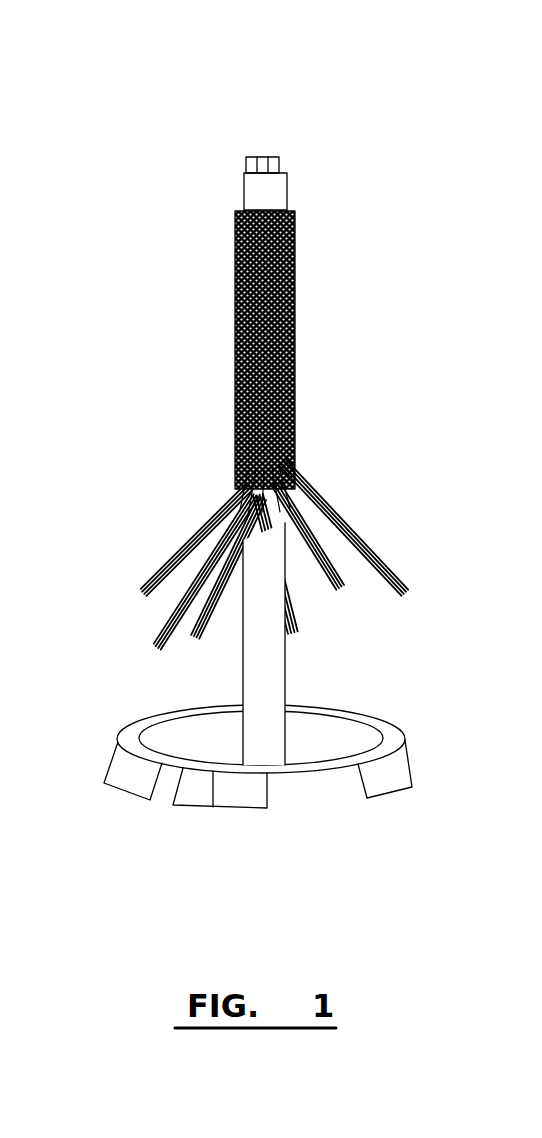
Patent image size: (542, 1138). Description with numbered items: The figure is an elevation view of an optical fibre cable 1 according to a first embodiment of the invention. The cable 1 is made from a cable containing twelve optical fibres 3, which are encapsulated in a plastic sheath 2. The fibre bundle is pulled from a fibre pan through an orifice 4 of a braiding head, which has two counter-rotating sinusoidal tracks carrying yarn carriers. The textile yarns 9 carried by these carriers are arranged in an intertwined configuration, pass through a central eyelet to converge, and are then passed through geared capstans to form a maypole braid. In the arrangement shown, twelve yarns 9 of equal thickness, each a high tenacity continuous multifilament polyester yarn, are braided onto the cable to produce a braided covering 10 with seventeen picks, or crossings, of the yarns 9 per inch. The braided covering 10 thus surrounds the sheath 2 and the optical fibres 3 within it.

The optical fibre cable 1 is at (218, 370).
The plastic sheath 2 is at (258, 660).
The optical fibres 3 is at (262, 157).
The orifice 4 is at (210, 808).
The yarns 9 is at (168, 560).
The braided covering 10 is at (237, 238).